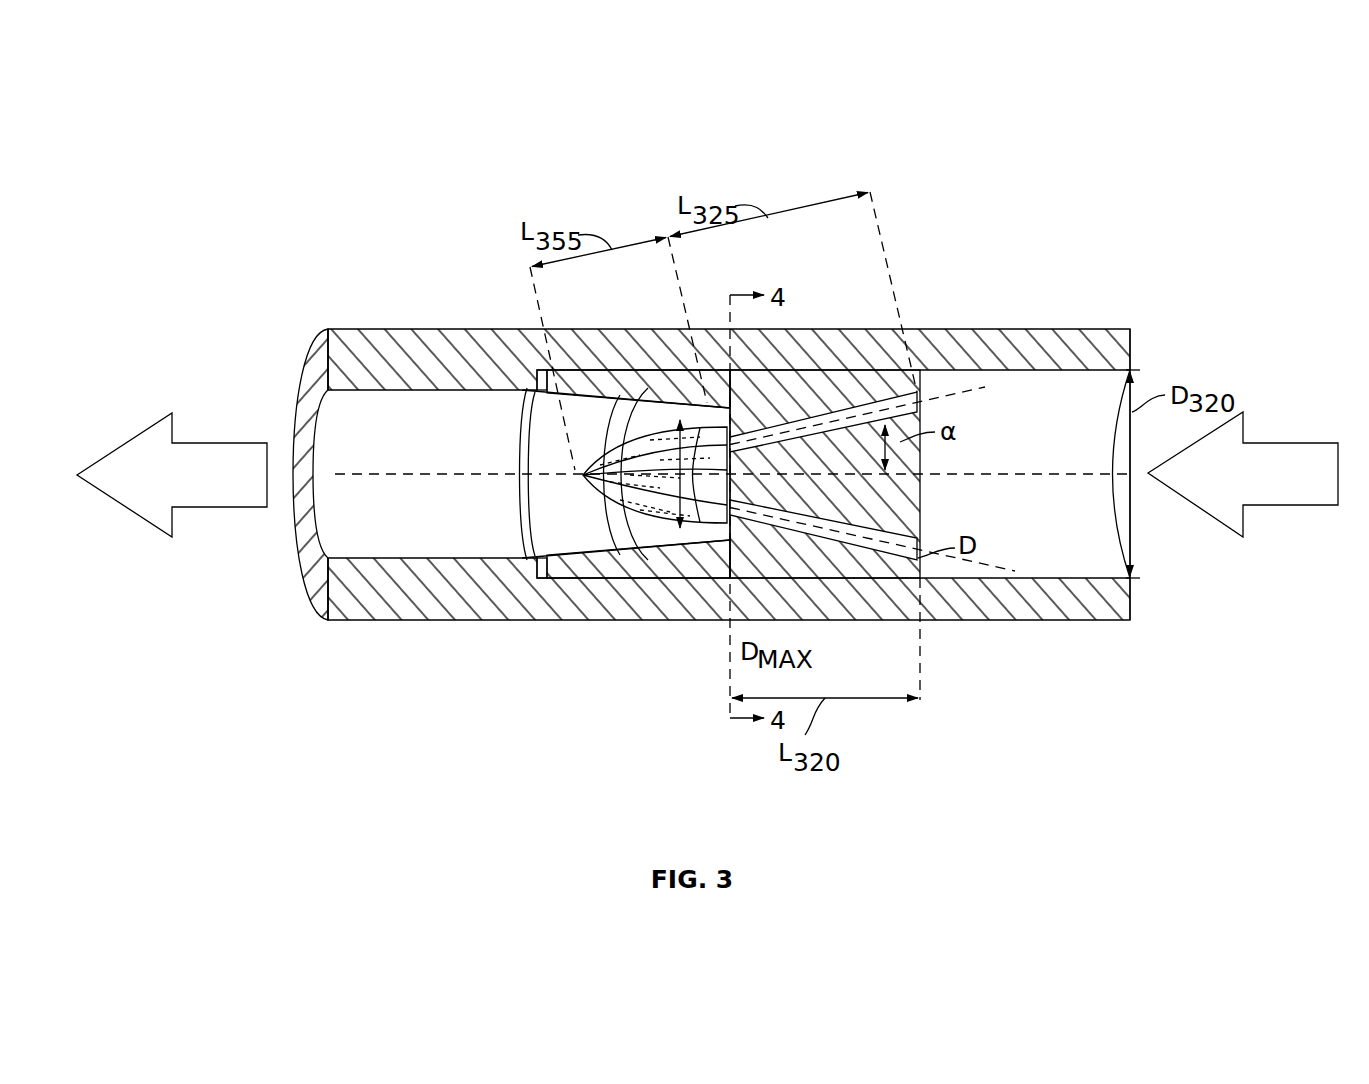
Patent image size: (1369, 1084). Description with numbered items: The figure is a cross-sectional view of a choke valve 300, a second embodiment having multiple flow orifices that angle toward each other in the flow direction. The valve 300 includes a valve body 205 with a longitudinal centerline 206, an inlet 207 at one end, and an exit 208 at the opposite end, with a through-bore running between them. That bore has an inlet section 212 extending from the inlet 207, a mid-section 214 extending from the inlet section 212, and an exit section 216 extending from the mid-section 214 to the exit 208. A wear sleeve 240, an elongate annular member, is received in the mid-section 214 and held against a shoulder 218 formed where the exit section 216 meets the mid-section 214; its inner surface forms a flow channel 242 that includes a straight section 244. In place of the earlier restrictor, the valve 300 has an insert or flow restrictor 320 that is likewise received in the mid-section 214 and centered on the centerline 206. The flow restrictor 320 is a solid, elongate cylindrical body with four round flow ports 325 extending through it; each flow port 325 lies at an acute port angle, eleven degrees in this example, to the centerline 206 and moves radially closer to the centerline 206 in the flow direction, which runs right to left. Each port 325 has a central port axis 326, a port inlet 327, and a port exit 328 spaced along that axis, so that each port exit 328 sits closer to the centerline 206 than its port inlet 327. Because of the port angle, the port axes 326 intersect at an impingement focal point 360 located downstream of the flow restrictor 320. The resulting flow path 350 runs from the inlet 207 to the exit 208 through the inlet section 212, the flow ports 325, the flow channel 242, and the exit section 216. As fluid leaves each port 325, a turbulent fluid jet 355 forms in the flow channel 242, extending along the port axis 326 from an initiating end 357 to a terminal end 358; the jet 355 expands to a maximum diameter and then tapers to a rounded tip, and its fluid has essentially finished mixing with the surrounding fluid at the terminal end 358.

The choke valve 300 is at (1174, 198).
The valve body 205 is at (412, 342).
The centerline axis 206 is at (1055, 474).
The inlet 207 is at (1125, 545).
The exit 208 is at (322, 432).
The inlet section 212 is at (1083, 570).
The mid-section 214 is at (870, 523).
The exit section 216 is at (375, 592).
The shoulder 218 is at (538, 570).
The wear sleeve 240 is at (545, 587).
The flow channel 242 is at (542, 520).
The straight section 244 is at (667, 530).
The flow restrictor 320 is at (866, 576).
The flow port 325 is at (833, 396).
The port axis 326 is at (965, 392).
The port inlet 327 is at (960, 390).
The port exit 328 is at (750, 500).
The flow path 350 is at (1072, 505).
The fluid jet 355 is at (600, 420).
The initiating end 357 is at (733, 430).
The terminal end 358 is at (592, 480).
The impingement focal point 360 is at (548, 465).